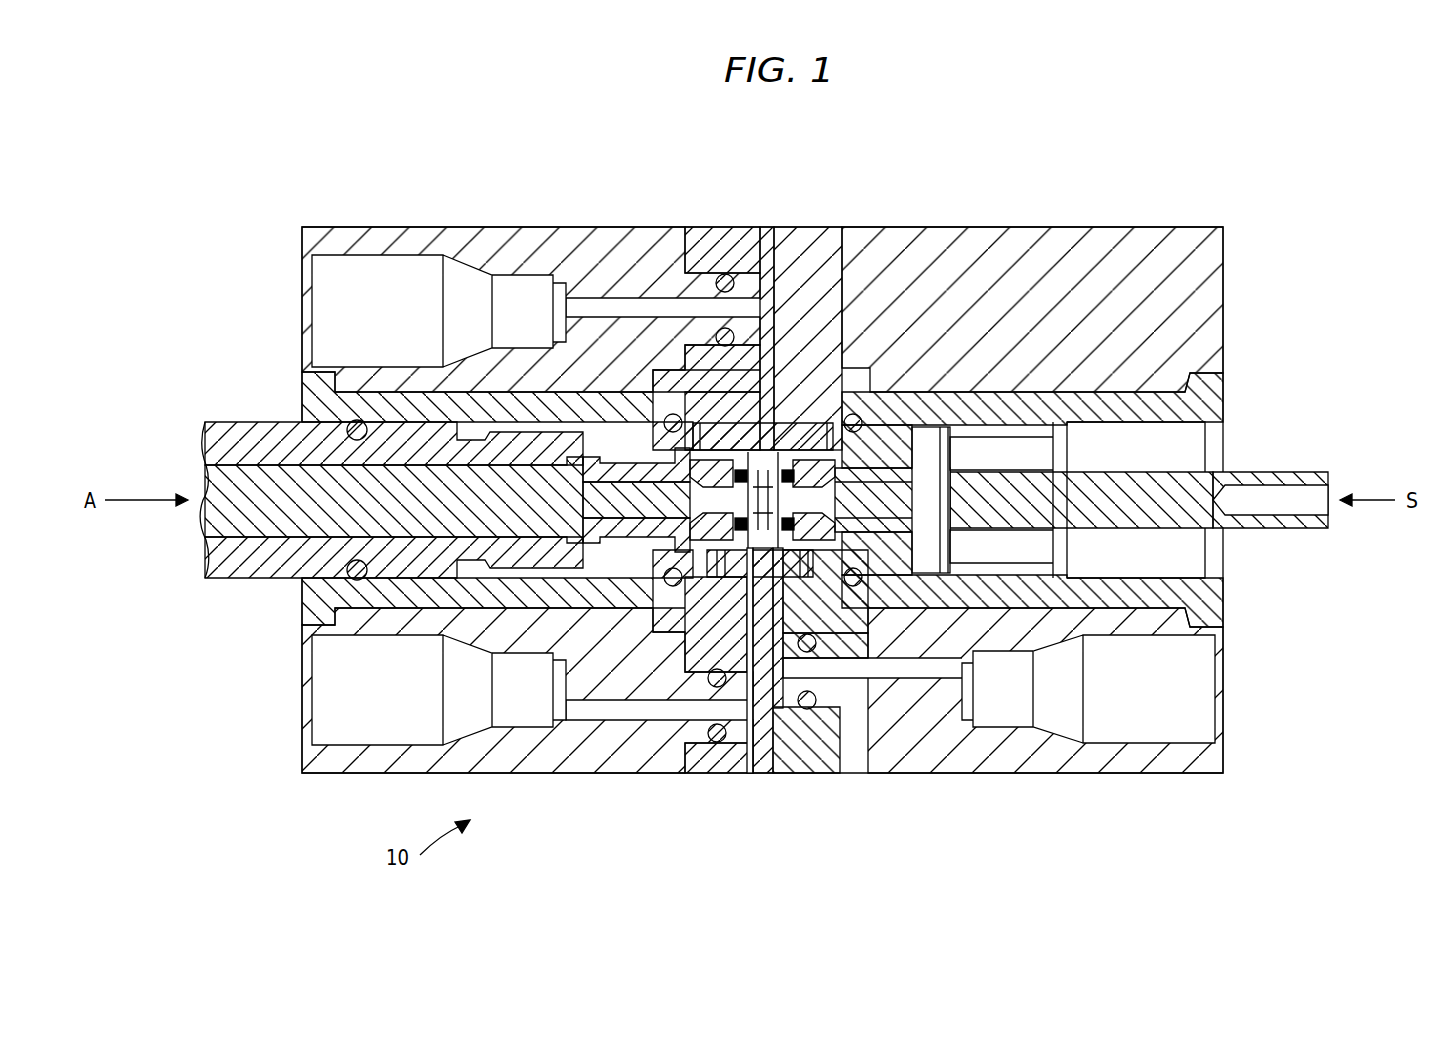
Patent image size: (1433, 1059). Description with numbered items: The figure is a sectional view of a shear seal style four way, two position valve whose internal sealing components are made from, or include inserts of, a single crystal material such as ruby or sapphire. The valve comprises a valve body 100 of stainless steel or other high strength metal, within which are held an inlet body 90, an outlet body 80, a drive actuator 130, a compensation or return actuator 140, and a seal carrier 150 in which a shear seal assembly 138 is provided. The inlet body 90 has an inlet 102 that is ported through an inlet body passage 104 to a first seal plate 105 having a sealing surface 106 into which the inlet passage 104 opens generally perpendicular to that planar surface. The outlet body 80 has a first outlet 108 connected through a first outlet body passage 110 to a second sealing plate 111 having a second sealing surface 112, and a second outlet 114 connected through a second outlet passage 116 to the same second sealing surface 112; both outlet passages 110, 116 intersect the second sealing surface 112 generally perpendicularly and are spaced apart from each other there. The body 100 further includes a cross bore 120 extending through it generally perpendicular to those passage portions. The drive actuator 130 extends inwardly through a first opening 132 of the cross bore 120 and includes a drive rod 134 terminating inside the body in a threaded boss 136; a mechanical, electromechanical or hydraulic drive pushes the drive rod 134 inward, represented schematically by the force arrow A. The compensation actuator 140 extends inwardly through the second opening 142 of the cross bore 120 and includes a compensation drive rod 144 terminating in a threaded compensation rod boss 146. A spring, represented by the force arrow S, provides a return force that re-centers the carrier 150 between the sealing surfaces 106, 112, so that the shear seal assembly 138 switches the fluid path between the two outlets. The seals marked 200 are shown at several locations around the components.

The outlet body 80 is at (850, 522).
The inlet body 90 is at (762, 232).
The valve body 100 is at (1002, 188).
The inlet 102 is at (325, 303).
The inlet body passage 104 is at (808, 440).
The first seal plate 105 is at (840, 440).
The sealing surface 106 is at (722, 276).
The first outlet 108 is at (325, 695).
The first outlet body passage 110 is at (665, 710).
The second sealing plate 111 is at (779, 560).
The second sealing surface 112 is at (748, 560).
The second outlet 114 is at (1195, 681).
The second outlet passage 116 is at (830, 650).
The cross bore 120 is at (1080, 390).
The drive actuator 130 is at (250, 448).
The first opening 132 is at (305, 590).
The drive rod 134 is at (215, 505).
The threaded boss 136 is at (650, 512).
The shear seal assembly 138 is at (805, 640).
The compensation actuator 140 is at (1336, 511).
The second opening 142 is at (1195, 548).
The compensation drive rod 144 is at (1200, 495).
The threaded compensation rod boss 146 is at (870, 495).
The seal carrier 150 is at (770, 450).
The o-ring seals 200 is at (735, 470).